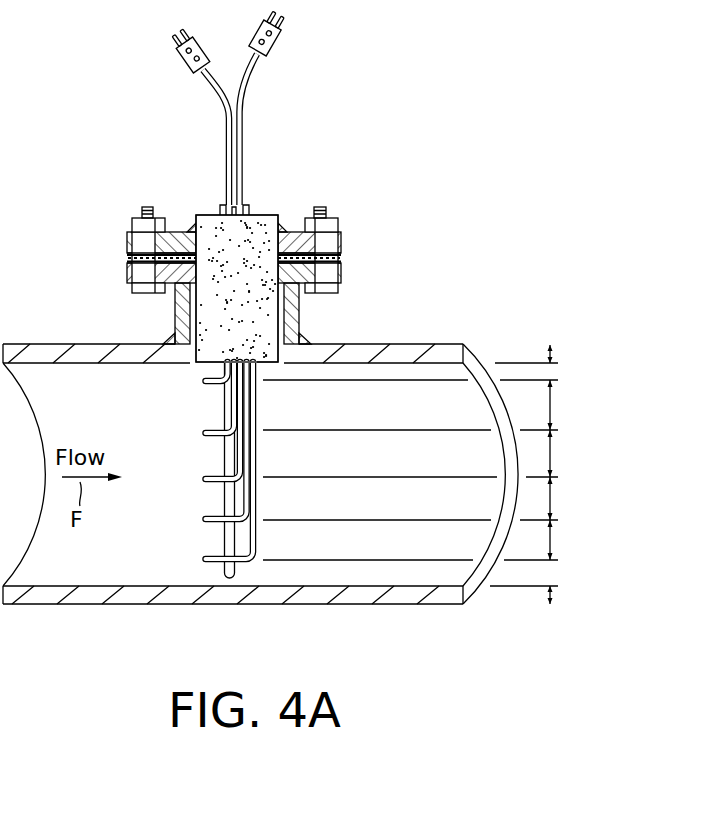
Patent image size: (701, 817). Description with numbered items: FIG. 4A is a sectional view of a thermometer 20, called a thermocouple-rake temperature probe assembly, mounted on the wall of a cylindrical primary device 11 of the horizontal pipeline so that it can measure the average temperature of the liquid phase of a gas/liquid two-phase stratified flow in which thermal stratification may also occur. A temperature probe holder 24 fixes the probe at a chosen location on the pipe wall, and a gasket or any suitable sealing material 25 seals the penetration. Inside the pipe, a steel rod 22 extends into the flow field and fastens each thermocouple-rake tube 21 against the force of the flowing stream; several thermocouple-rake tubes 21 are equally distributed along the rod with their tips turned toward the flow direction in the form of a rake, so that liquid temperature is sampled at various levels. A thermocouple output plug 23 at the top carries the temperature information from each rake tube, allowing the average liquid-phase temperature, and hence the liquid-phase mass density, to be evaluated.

The cylindrical primary device 11 is at (80, 605).
The thermometer 20 is at (268, 200).
The thermocouple-rake tube 21 is at (199, 561).
The steel rod 22 is at (224, 540).
The thermocouple output plug 23 is at (178, 70).
The temperature probe holder 24 is at (341, 258).
The gasket or any suitable sealing material 25 is at (210, 218).